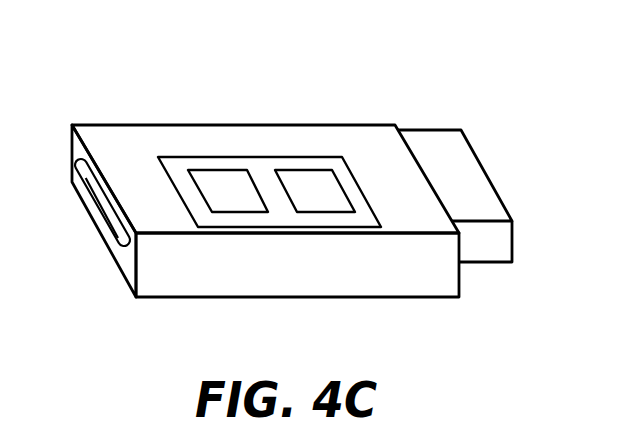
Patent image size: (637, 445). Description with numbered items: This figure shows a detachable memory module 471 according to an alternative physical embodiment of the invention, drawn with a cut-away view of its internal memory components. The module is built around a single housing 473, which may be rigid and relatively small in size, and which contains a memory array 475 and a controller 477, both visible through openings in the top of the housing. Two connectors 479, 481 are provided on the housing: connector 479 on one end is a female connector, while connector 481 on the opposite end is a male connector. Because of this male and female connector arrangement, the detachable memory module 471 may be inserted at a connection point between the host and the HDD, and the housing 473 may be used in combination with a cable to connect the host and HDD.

The detachable memory module 471 is at (292, 184).
The housing 473 is at (165, 125).
The memory array 475 is at (230, 203).
The controller 477 is at (322, 203).
The connector 479 is at (101, 215).
The connector 481 is at (445, 128).